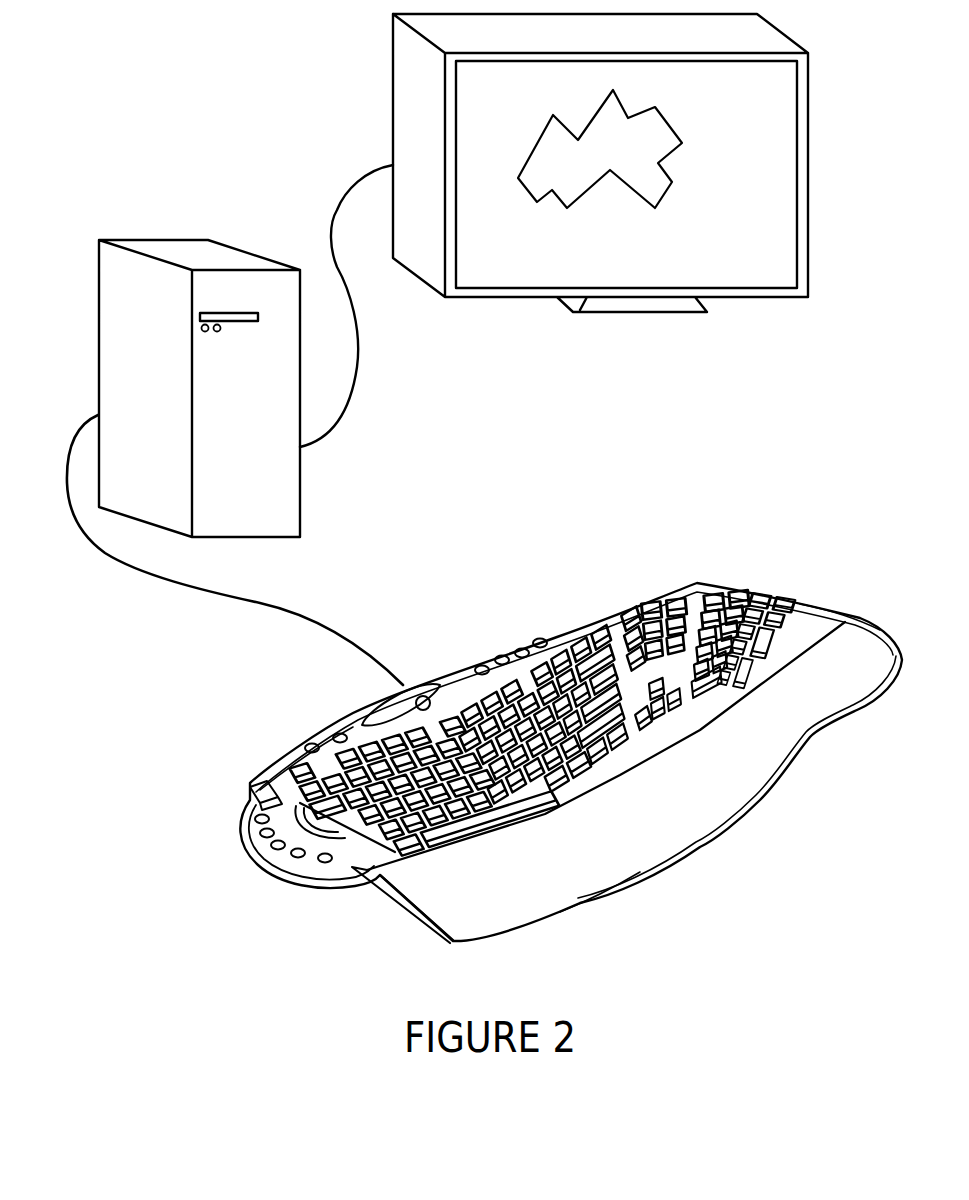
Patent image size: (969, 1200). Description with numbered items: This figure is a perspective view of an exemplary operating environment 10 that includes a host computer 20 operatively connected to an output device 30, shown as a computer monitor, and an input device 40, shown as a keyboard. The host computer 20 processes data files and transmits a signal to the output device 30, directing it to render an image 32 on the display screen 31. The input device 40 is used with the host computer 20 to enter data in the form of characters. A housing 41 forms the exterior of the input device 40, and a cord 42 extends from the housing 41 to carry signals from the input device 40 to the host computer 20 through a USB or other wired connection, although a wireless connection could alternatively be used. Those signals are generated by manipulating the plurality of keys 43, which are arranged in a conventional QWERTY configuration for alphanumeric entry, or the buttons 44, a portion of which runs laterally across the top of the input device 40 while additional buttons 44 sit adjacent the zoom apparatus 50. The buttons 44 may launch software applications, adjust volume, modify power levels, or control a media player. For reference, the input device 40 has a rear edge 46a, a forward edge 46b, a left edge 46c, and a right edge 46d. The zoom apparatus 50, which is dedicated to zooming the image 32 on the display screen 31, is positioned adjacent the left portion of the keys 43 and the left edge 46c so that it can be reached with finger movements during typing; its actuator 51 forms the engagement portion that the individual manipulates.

The operating environment 10 is at (760, 502).
The host computer 20 is at (306, 488).
The output device 30 is at (772, 302).
The display screen 31 is at (787, 195).
The image 32 is at (588, 188).
The input device 40 is at (572, 618).
The housing 41 is at (708, 818).
The cord 42 is at (342, 627).
The keys 43 is at (545, 660).
The buttons 44 is at (502, 653).
The rear edge 46a is at (302, 743).
The forward edge 46b is at (553, 917).
The left edge 46c is at (287, 877).
The right edge 46d is at (830, 615).
The zoom apparatus 50 is at (286, 801).
The actuator 51 is at (330, 832).